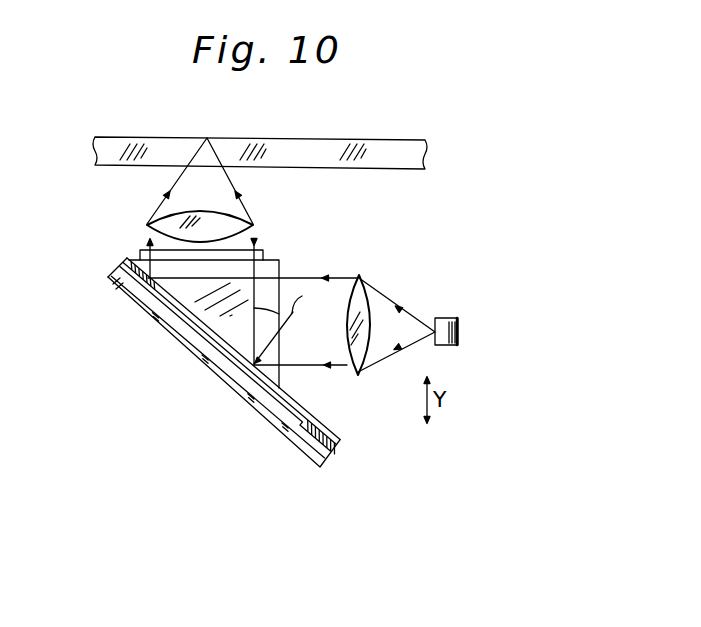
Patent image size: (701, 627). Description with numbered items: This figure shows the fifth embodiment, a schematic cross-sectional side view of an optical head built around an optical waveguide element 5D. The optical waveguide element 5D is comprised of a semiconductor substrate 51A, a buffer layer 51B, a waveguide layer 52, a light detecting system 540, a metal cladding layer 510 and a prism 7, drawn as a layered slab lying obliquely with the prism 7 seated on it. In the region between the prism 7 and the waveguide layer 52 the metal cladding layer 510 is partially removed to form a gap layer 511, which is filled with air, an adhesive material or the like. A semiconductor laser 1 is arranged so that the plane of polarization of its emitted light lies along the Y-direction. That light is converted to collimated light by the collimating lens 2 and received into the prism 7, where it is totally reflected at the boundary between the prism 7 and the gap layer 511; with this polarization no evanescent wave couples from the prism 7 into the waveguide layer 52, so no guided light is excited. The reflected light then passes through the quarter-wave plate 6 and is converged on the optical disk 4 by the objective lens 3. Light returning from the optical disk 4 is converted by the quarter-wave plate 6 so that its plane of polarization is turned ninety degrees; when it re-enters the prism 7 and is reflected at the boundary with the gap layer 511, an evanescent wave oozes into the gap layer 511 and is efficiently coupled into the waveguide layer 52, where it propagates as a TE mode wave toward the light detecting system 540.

The semiconductor laser 1 is at (449, 326).
The collimating lens 2 is at (360, 279).
The objective lens 3 is at (254, 223).
The optical disk 4 is at (385, 148).
The optical waveguide element 5D is at (170, 391).
The quarter-wave plate 6 is at (265, 253).
The prism 7 is at (280, 267).
The metal cladding layer 510 is at (324, 427).
The gap layer 511 is at (180, 308).
The semiconductor substrate 51A is at (252, 400).
The buffer layer 51B is at (202, 346).
The waveguide layer 52 is at (338, 448).
The light detecting system 540 is at (300, 447).